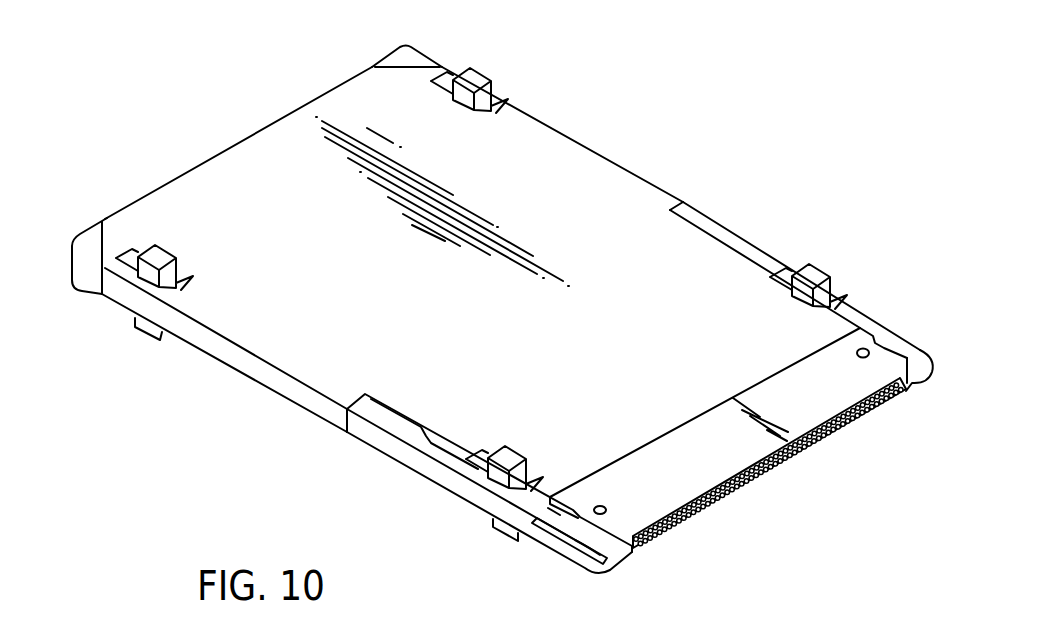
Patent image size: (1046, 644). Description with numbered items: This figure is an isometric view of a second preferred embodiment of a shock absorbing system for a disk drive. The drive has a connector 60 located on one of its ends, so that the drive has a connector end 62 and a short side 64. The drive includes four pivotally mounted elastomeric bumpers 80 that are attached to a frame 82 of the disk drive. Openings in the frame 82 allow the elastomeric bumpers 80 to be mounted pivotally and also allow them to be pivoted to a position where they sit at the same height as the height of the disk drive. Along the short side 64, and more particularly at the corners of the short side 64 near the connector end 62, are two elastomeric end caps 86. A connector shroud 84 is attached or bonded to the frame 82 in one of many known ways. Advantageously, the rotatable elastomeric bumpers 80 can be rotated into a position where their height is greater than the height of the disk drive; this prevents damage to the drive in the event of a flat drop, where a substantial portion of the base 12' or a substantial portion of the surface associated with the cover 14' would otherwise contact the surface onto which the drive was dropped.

The base 12' is at (517, 332).
The cover 14' is at (588, 292).
The connector 60 is at (863, 417).
The connector end 62 is at (848, 377).
The short side 64 is at (240, 137).
The elastomeric bumpers 80 is at (473, 80).
The frame 82 is at (212, 343).
The connector shroud 84 is at (483, 498).
The elastomeric end caps 86 is at (402, 57).